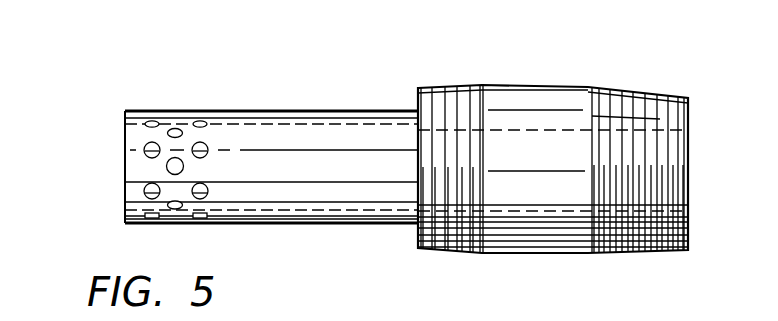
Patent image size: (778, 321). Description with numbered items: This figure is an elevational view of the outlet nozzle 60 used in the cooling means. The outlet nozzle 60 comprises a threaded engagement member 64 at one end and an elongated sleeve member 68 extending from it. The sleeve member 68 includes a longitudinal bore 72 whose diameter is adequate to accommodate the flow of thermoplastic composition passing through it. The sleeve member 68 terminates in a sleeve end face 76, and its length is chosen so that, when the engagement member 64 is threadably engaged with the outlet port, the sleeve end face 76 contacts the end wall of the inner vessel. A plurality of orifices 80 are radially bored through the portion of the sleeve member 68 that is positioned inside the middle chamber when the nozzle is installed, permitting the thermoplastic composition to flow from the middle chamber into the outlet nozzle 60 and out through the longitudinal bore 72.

The outlet nozzle 60 is at (563, 74).
The threaded engagement member 64 is at (592, 120).
The elongated sleeve member 68 is at (314, 112).
The longitudinal bore 72 is at (292, 172).
The sleeve end face 76 is at (125, 140).
The orifices 80 is at (146, 191).